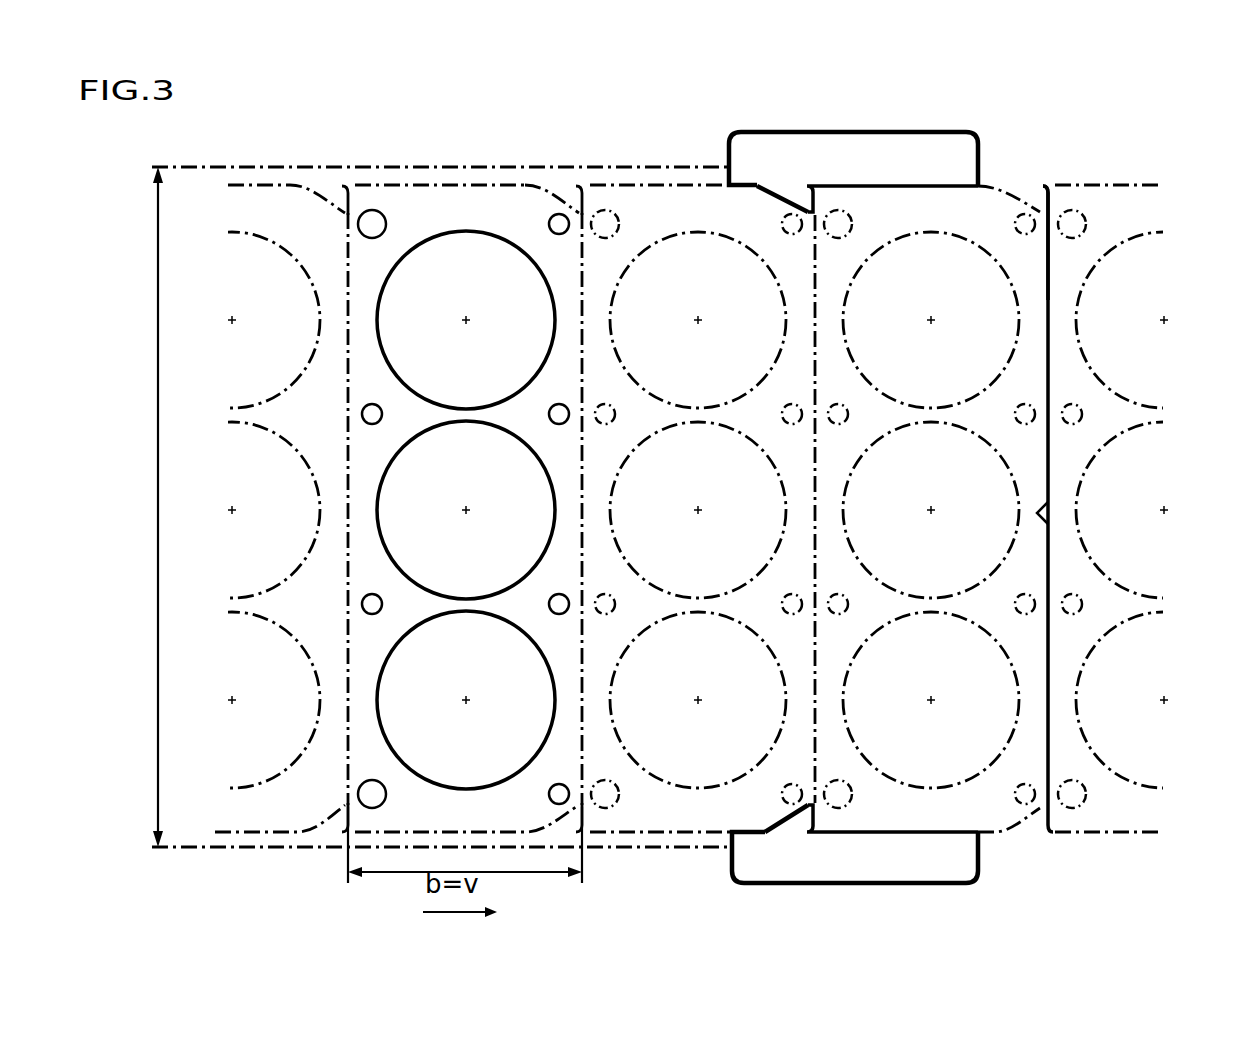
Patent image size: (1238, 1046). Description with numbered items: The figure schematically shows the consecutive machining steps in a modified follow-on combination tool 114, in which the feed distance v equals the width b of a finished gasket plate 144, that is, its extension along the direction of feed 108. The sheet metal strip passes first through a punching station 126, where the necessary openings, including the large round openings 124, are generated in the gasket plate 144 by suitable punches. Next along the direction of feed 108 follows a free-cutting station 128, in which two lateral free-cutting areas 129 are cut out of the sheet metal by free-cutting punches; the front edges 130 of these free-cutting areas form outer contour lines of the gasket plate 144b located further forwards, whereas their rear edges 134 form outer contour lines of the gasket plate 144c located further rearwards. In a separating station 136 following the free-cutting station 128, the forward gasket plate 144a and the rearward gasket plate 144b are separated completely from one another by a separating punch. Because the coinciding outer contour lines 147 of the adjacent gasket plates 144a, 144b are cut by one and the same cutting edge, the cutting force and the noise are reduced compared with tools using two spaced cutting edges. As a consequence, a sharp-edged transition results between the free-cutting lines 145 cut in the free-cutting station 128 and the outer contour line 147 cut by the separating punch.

The follow-on combination tool 114 is at (265, 166).
The combustion chamber openings 124 is at (272, 207).
The punching station 126 is at (443, 167).
The gasket plate 144 is at (498, 208).
The gasket plate 144a is at (1133, 820).
The gasket plate 144b is at (975, 812).
The gasket plate 144c is at (678, 805).
The free-cutting station 128 is at (726, 157).
The free-cutting areas 129 is at (858, 155).
The free-cutting lines 145 is at (787, 198).
The front edges 130 is at (822, 200).
The rear edges 134 is at (757, 192).
The separating station 136 is at (1048, 180).
The outer contour lines 147 is at (1050, 508).
The direction of feed 108 is at (455, 915).